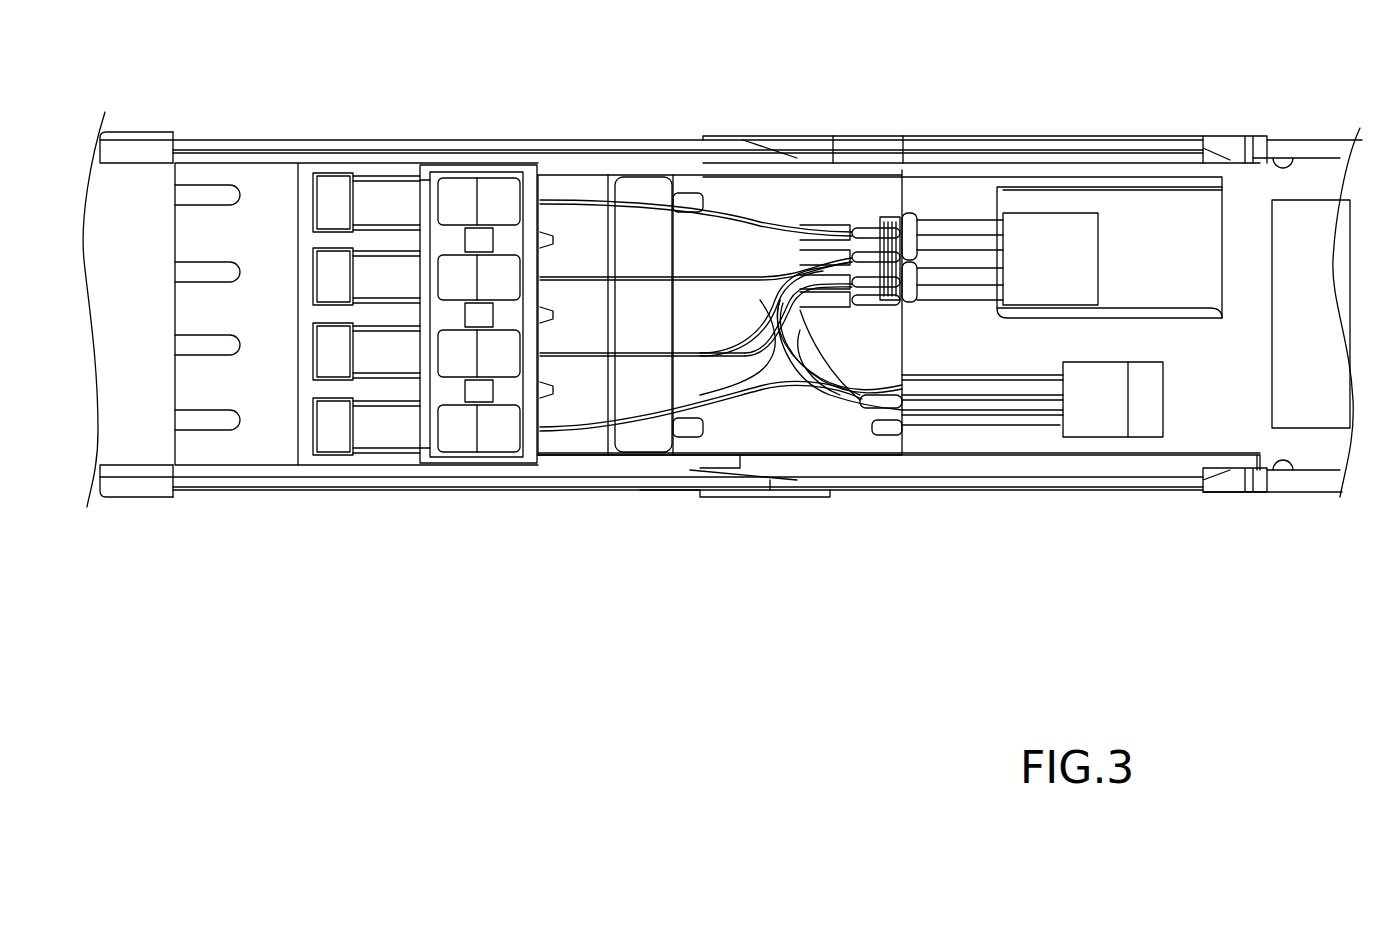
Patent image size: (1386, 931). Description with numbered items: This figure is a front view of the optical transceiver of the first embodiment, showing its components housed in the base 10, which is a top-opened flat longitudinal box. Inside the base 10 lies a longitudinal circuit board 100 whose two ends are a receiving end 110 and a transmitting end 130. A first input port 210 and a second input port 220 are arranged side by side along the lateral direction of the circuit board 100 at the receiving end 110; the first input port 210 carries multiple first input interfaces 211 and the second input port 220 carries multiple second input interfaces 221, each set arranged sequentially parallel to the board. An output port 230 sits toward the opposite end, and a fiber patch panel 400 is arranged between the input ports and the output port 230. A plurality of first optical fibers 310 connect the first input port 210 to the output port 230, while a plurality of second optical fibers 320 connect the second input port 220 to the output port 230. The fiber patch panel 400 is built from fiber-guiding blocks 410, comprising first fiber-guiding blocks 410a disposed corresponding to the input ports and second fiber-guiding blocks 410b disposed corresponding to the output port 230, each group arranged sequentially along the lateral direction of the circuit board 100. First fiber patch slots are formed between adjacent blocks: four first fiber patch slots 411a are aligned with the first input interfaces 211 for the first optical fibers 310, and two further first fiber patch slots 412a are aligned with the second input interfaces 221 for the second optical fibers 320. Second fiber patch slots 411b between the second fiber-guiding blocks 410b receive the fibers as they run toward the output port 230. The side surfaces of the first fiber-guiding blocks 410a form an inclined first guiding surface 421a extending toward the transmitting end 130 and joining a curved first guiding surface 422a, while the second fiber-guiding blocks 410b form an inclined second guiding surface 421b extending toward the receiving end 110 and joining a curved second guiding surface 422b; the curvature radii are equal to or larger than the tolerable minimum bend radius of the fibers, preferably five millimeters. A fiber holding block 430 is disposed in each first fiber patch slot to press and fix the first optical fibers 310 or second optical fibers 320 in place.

The base 10 is at (573, 145).
The circuit board 100 is at (953, 172).
The receiving end 110 is at (1238, 205).
The transmitting end 130 is at (633, 192).
The first input port 210 is at (1062, 209).
The first input interfaces 211 is at (993, 216).
The second input port 220 is at (1138, 442).
The second input interfaces 221 is at (1062, 428).
The output port 230 is at (513, 165).
The first optical fibers 310 is at (782, 222).
The second optical fibers 320 is at (978, 430).
The fiber patch panel 400 is at (715, 167).
The fiber-guiding blocks 410 is at (917, 675).
The first fiber-guiding blocks 410a is at (893, 430).
The second fiber-guiding blocks 410b is at (680, 383).
The first fiber patch slots 411a is at (871, 213).
The second fiber patch slots 411b is at (666, 360).
The first fiber patch slots 412a is at (906, 430).
The first guiding surface 421a is at (858, 414).
The second guiding surface 421b is at (715, 358).
The first guiding surface 422a is at (805, 340).
The second guiding surface 422b is at (777, 348).
The fiber holding block 430 is at (912, 216).